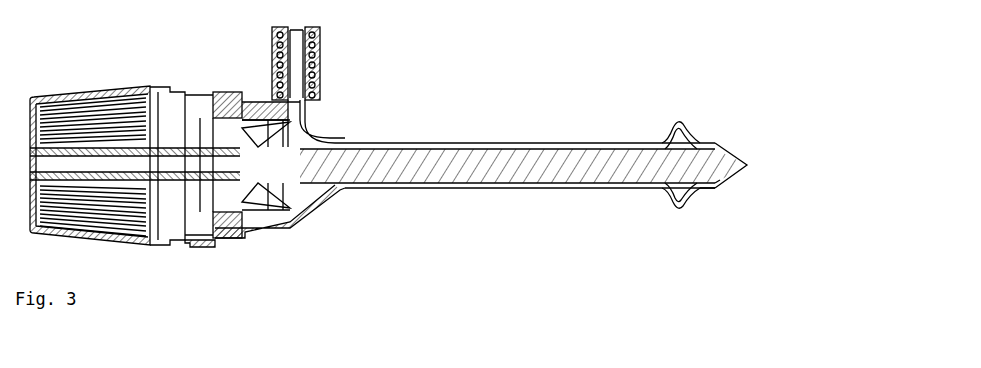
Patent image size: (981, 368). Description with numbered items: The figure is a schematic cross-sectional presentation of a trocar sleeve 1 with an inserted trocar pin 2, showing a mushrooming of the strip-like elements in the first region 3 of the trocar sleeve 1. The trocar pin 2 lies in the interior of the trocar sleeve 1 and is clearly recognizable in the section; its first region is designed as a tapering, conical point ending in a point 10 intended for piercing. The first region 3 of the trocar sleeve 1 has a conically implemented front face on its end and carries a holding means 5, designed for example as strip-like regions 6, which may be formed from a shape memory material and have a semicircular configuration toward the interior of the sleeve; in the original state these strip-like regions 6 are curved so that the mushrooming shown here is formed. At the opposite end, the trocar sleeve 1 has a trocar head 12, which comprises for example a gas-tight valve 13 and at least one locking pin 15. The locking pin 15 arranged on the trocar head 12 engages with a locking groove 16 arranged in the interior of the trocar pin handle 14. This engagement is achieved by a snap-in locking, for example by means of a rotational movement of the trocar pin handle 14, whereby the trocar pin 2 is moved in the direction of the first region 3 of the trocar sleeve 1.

The trocar sleeve 1 is at (527, 90).
The trocar pin 2 is at (501, 172).
The first region of the trocar sleeve 3 is at (700, 143).
The holding means 5 is at (654, 110).
The strip-like regions 6 is at (675, 208).
The point 10 is at (730, 175).
The trocar head 12 is at (245, 98).
The gas-tight valve 13 is at (322, 53).
The trocar pin handle 14 is at (90, 92).
The locking pin 15 is at (222, 240).
The locking groove 16 is at (200, 246).